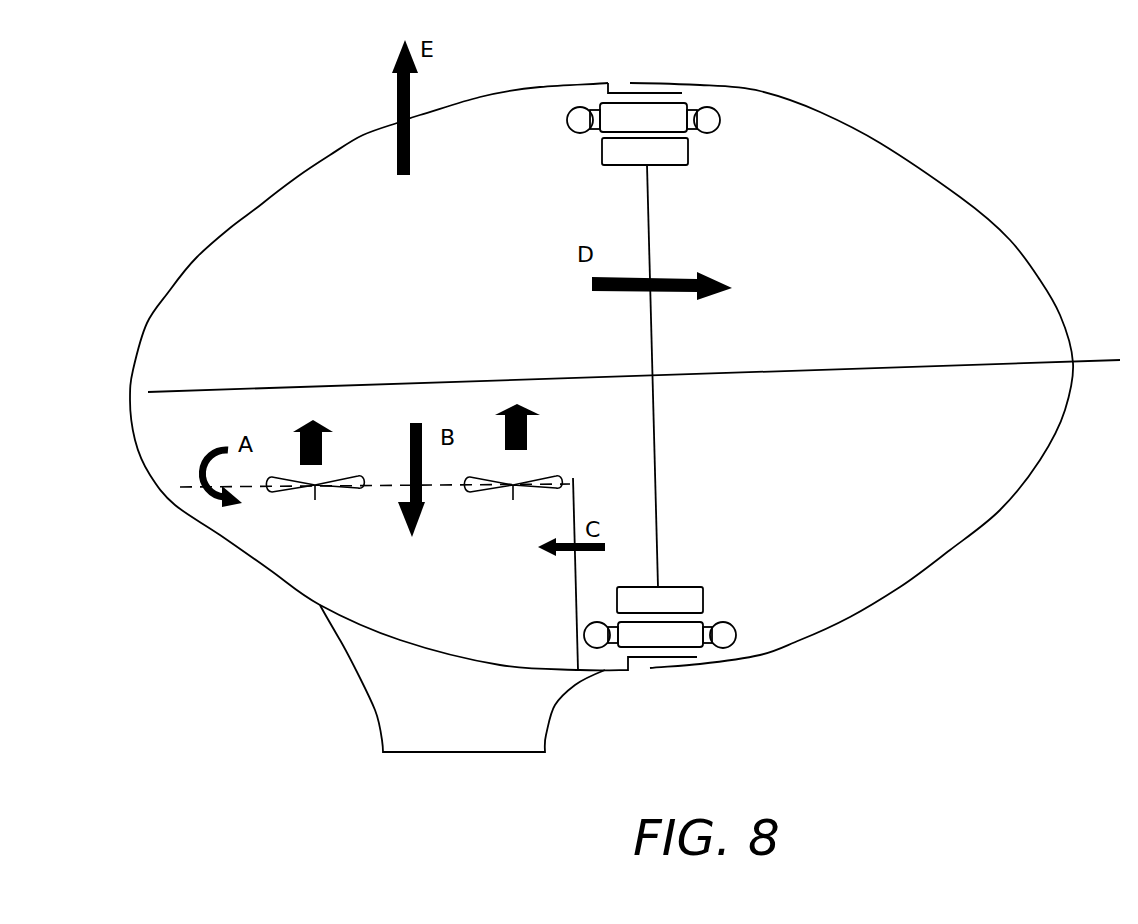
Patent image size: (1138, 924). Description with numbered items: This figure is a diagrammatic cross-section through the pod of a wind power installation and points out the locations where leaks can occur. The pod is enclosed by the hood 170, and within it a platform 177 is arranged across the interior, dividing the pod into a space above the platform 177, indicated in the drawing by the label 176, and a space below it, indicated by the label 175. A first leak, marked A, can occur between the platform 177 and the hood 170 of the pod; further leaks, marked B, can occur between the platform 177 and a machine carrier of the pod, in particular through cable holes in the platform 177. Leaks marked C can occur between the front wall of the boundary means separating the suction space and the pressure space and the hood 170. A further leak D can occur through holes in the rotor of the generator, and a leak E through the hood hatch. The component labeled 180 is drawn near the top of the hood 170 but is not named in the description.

The hood 170 is at (187, 279).
The lower chamber 175 is at (448, 596).
The upper chamber 176 is at (442, 293).
The platform 177 is at (192, 486).
The roller component 180 is at (690, 95).